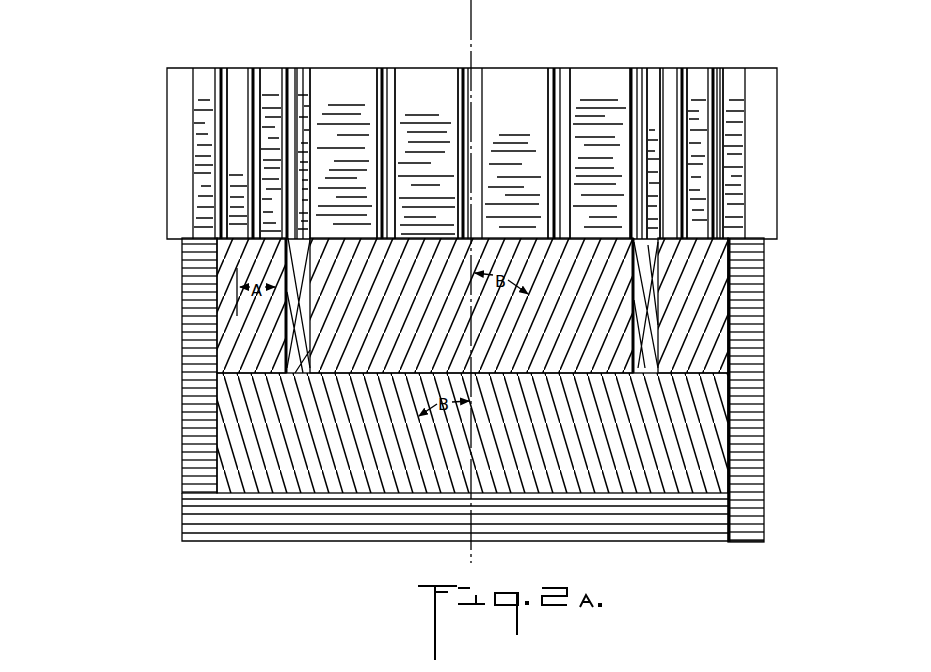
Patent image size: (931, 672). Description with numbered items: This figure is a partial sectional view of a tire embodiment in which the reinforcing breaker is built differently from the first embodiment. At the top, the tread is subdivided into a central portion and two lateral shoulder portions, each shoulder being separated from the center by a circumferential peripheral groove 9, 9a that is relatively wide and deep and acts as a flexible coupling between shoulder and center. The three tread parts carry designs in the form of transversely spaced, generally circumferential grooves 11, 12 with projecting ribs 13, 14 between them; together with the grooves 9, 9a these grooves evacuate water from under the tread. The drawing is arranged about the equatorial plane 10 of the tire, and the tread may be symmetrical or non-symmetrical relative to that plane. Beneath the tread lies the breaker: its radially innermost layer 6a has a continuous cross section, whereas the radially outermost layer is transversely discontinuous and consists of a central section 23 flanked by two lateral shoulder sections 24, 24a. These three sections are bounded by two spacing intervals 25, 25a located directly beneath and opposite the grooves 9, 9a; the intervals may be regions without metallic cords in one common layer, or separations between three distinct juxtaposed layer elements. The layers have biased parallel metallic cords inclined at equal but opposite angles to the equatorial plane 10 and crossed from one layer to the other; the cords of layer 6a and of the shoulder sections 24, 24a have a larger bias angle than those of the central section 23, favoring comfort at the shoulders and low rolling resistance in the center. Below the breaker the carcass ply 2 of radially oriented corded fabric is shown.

The carcass ply 2 is at (188, 285).
The radially innermost layer 6a is at (243, 452).
The circumferential peripheral groove 9 is at (293, 75).
The circumferential peripheral groove 9a is at (640, 80).
The equatorial plane 10 is at (472, 47).
The groove 11 is at (382, 72).
The groove 12 is at (220, 72).
The projecting rib 13 is at (342, 75).
The projecting rib 14 is at (202, 72).
The central section 23 is at (528, 250).
The lateral shoulder section 24 is at (228, 261).
The lateral shoulder section 24a is at (718, 276).
The spacing interval 25 is at (301, 247).
The spacing interval 25a is at (630, 246).